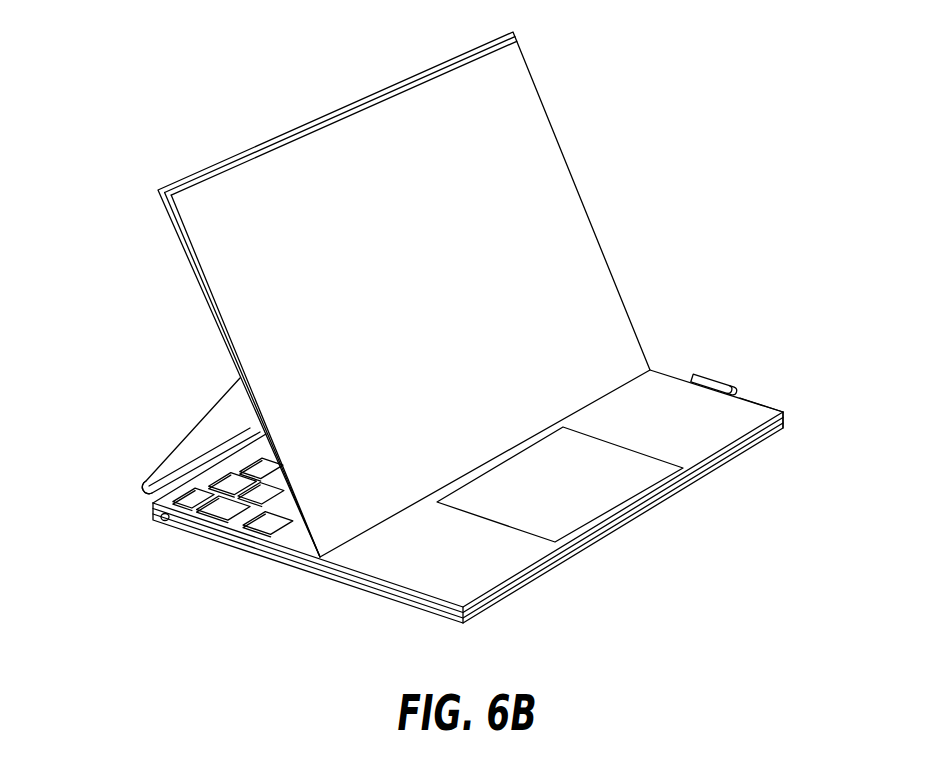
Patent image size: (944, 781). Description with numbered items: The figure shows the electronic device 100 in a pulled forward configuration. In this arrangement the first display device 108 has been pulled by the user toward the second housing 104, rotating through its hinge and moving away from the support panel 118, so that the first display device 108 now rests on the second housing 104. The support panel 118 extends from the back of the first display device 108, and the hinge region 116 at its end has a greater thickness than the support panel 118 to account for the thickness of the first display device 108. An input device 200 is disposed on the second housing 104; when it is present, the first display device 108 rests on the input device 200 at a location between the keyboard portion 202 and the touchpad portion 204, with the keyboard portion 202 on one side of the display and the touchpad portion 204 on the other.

The electronic device 100 is at (671, 96).
The second housing 104 is at (296, 550).
The first display device 108 is at (307, 123).
The hinge region 116 is at (148, 486).
The support panel 118 is at (195, 424).
The input device 200 is at (679, 360).
The keyboard portion 202 is at (226, 503).
The touchpad portion 204 is at (758, 394).